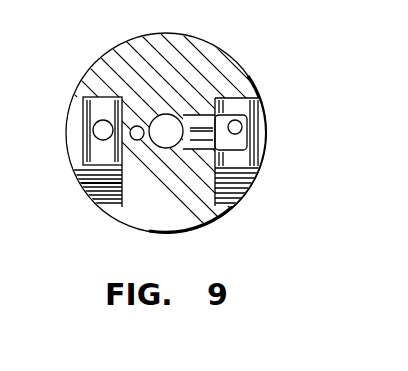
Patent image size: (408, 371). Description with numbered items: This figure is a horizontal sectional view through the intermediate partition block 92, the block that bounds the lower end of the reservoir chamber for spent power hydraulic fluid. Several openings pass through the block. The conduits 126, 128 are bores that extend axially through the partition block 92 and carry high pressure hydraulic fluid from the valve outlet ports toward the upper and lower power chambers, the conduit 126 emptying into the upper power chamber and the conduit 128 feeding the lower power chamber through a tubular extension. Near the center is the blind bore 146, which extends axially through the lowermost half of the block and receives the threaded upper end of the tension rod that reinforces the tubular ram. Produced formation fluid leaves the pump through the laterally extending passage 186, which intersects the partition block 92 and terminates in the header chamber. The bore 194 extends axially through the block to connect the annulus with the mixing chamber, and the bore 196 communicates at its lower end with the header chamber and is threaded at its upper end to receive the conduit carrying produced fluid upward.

The intermediate partition block 92 is at (178, 47).
The conduit 126 is at (134, 138).
The conduit 128 is at (93, 130).
The blind bore 146 is at (163, 148).
The passage 186 is at (195, 148).
The bore 194 is at (240, 121).
The bore 196 is at (238, 144).